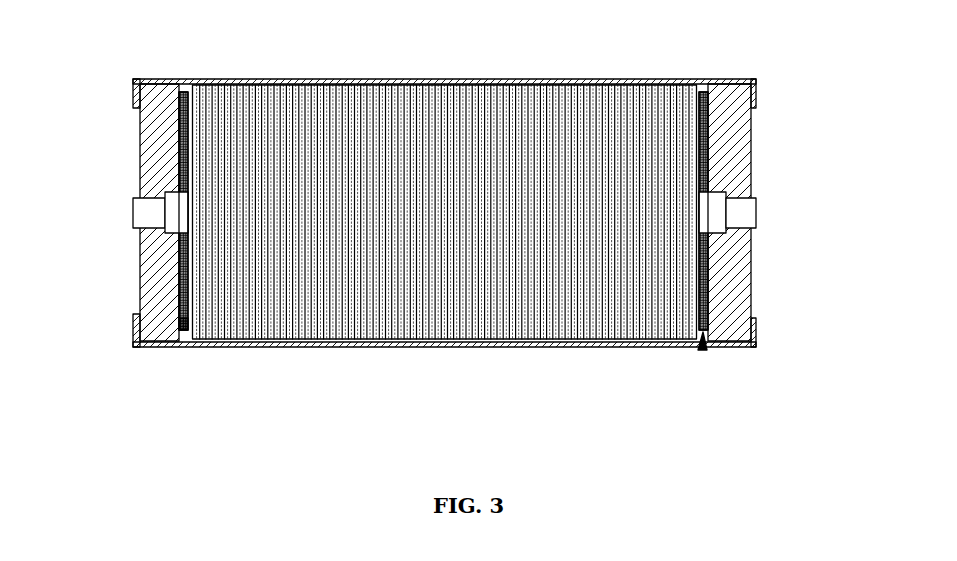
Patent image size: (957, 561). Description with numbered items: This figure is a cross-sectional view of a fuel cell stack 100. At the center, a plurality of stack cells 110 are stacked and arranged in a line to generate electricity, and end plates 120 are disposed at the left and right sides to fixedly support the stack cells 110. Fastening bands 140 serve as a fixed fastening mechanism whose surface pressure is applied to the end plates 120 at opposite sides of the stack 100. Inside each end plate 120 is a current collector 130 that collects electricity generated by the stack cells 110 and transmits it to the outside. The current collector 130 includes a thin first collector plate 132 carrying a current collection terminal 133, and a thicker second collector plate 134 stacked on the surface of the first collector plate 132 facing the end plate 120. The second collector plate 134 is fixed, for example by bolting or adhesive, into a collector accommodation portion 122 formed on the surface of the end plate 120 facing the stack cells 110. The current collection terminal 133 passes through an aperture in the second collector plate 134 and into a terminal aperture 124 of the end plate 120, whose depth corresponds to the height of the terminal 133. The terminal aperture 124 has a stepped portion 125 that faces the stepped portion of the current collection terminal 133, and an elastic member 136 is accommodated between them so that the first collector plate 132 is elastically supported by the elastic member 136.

The fuel cell stack 100 is at (166, 30).
The stack cells 110 is at (446, 101).
The end plates 120 is at (742, 130).
The collector accommodation portion 122 is at (705, 176).
The terminal aperture 124 is at (724, 236).
The stepped portion 125 is at (718, 238).
The current collector 130 is at (232, 411).
The first collector plate 132 is at (188, 329).
The current collection terminal 133 is at (135, 213).
The second collector plate 134 is at (179, 319).
The elastic member 136 is at (160, 236).
The fastening bands 140 is at (735, 80).